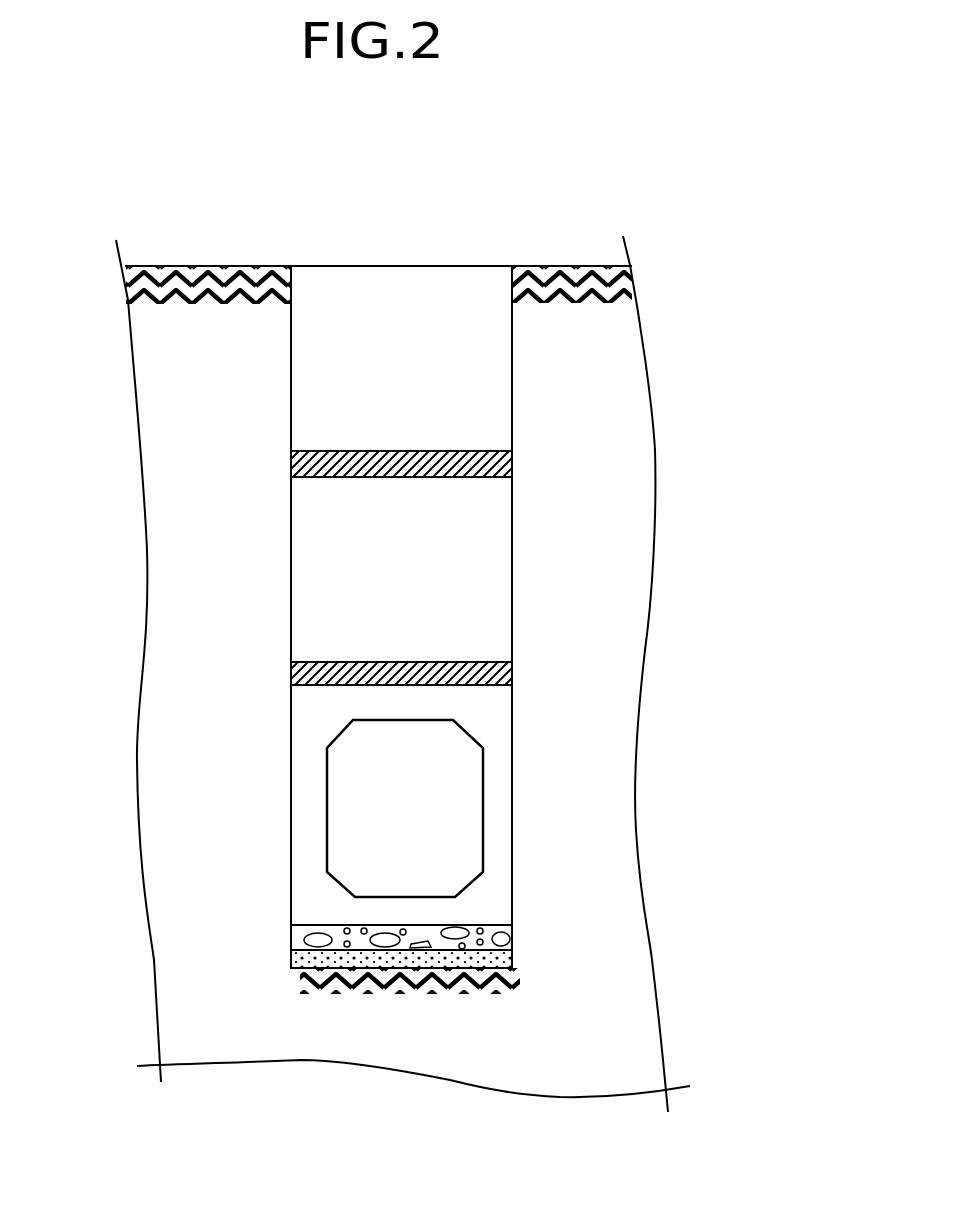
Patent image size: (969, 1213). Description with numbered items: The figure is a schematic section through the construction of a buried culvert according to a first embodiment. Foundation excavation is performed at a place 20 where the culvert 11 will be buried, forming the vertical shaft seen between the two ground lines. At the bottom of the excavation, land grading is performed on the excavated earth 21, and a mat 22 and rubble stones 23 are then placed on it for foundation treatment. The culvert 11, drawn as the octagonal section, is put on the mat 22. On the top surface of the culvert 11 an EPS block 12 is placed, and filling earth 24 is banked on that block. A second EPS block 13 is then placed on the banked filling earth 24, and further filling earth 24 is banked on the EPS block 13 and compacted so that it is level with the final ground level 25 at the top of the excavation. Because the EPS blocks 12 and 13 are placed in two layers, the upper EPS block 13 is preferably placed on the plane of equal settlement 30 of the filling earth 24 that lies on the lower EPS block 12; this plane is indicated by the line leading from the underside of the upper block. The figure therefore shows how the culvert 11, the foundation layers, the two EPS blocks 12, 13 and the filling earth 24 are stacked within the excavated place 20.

The culvert 11 is at (507, 868).
The EPS block 12 is at (505, 668).
The EPS block 13 is at (500, 455).
The place 20 is at (340, 302).
The excavated earth 21 is at (440, 990).
The mat 22 is at (305, 935).
The rubble stones 23 is at (300, 960).
The filling earth 24 is at (480, 362).
The final ground level 25 is at (573, 265).
The plane of equal settlement 30 is at (400, 478).